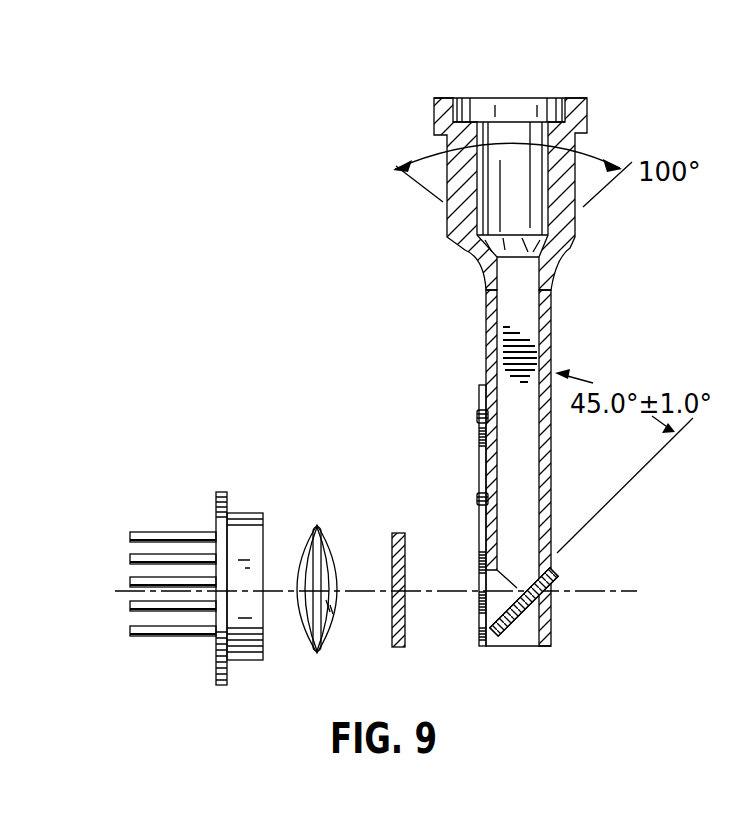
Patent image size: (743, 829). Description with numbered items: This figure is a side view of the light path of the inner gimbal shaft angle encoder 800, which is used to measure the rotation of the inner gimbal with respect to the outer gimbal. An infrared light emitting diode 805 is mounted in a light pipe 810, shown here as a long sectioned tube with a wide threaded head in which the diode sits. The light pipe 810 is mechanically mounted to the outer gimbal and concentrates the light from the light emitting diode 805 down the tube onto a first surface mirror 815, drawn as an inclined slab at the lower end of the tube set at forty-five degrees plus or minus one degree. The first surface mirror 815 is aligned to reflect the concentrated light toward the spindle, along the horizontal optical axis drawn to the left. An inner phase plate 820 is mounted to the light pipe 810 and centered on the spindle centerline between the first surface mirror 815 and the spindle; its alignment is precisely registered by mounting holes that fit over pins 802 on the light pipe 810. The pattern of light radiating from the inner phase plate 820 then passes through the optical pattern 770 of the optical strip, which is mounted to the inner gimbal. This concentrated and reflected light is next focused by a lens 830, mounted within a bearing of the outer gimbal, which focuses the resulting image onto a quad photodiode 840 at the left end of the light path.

The inner gimbal shaft angle encoder 800 is at (521, 380).
The infrared light emitting diode 805 is at (517, 98).
The light pipe 810 is at (551, 322).
The first surface mirror 815 is at (553, 600).
The inner phase plate 820 is at (479, 465).
The pins 802 is at (477, 416).
The optical pattern 770 is at (399, 533).
The lens 830 is at (316, 525).
The quad photodiode 840 is at (222, 492).